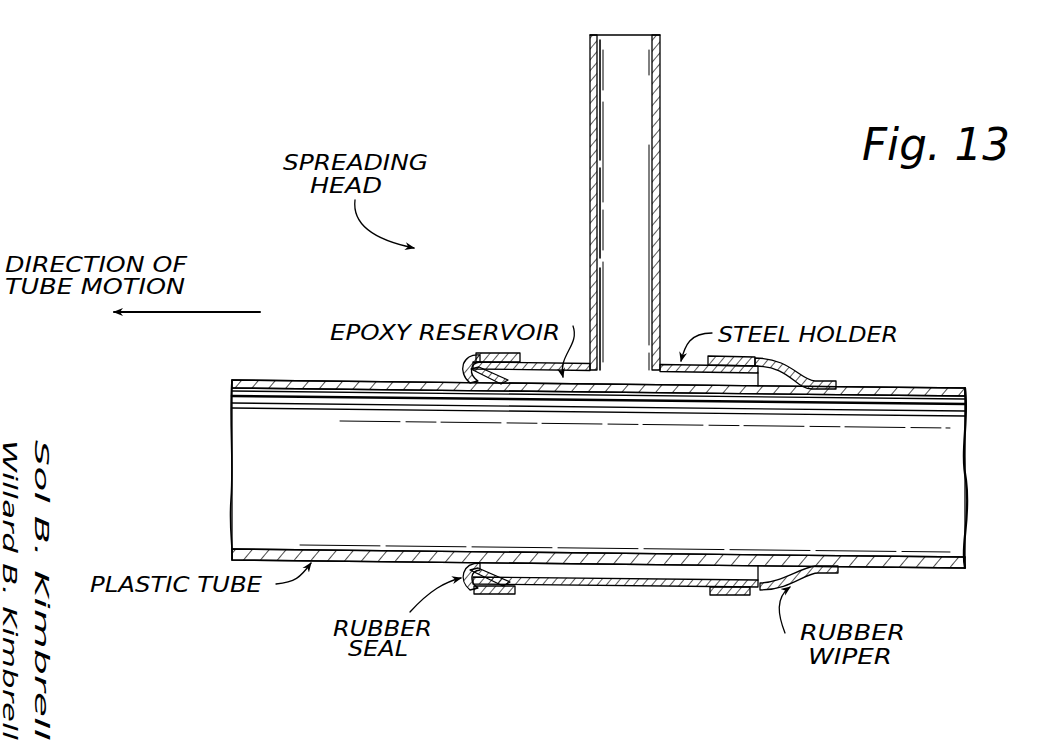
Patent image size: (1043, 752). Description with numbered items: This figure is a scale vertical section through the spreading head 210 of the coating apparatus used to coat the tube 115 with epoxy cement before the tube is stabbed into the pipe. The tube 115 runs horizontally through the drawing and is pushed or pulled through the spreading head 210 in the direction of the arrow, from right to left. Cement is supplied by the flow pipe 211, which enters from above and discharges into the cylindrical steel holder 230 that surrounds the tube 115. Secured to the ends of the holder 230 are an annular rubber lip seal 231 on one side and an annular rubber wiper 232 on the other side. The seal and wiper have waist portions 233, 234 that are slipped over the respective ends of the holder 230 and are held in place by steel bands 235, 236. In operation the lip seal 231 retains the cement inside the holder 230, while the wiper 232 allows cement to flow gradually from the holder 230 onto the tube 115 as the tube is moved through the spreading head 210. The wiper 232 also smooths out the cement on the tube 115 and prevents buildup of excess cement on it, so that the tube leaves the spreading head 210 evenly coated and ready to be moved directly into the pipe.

The tube 115 is at (275, 380).
The spreading head 210 is at (583, 319).
The flow pipe 211 is at (661, 150).
The steel holder 230 is at (600, 577).
The rubber lip seal 231 is at (462, 378).
The rubber wiper 232 is at (795, 375).
The waist portion 233 is at (522, 589).
The waist portion 234 is at (700, 591).
The steel band 235 is at (466, 353).
The steel band 236 is at (722, 597).